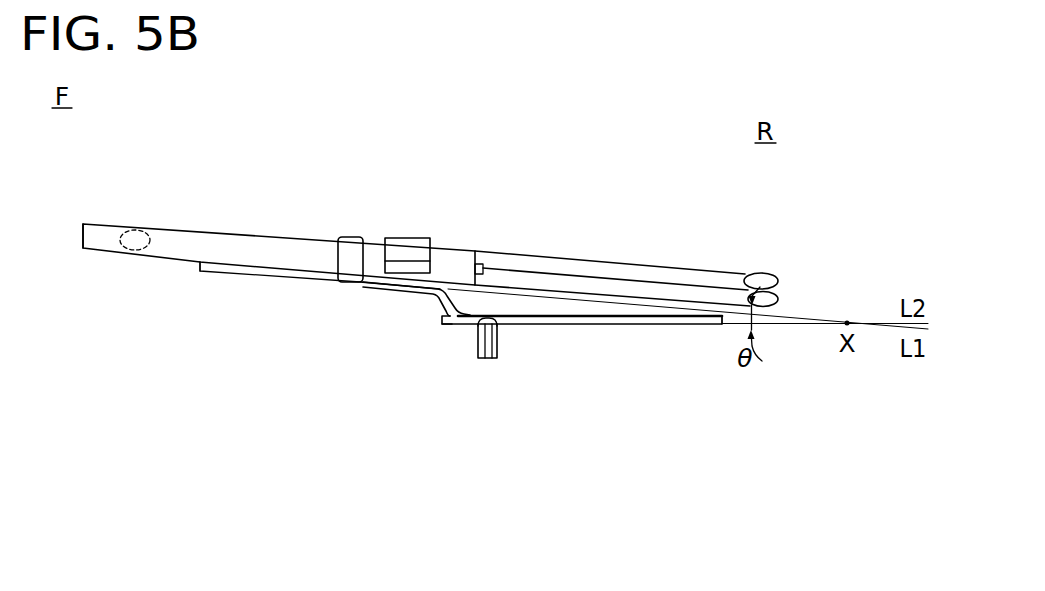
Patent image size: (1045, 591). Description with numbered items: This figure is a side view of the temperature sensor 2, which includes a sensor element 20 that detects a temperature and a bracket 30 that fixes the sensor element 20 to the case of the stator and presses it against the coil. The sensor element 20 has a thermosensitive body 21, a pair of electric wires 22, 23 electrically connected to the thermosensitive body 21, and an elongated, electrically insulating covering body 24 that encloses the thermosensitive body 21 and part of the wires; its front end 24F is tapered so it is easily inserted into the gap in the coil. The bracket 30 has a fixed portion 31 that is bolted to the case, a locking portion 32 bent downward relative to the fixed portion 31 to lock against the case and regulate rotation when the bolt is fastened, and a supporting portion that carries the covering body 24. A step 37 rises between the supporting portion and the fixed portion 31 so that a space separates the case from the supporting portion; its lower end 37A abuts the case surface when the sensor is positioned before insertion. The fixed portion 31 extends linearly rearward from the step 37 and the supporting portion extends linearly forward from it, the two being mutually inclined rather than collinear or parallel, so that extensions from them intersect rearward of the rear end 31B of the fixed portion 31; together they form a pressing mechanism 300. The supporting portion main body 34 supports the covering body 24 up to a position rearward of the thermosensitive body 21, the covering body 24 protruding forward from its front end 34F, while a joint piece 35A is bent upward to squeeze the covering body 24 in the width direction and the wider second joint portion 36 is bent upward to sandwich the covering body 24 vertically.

The temperature sensor 2 is at (573, 138).
The sensor element 20 is at (262, 208).
The thermosensitive body 21 is at (148, 229).
The electric wire 22 is at (676, 265).
The electric wire 23 is at (680, 303).
The covering body 24 is at (224, 232).
The front end of covering body 24F is at (83, 232).
The bracket 30 is at (538, 355).
The fixed portion 31 is at (622, 325).
The rear end of fixed portion 31B is at (725, 326).
The locking portion 32 is at (492, 360).
The supporting portion main body 34 is at (322, 284).
The front end of supporting portion main body 34F is at (200, 266).
The joint piece 35A is at (352, 236).
The second joint portion 36 is at (395, 238).
The step 37 is at (442, 303).
The lower end of step 37A is at (451, 325).
The pressing mechanism 300 is at (445, 504).